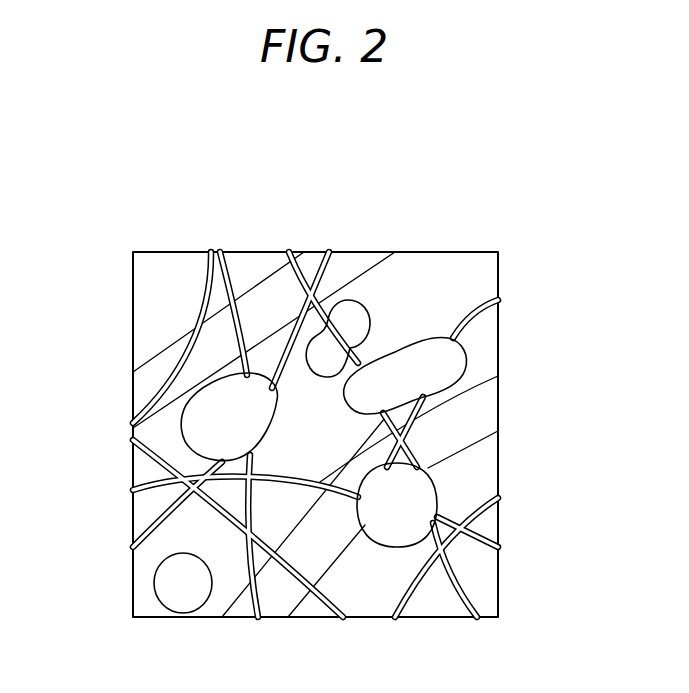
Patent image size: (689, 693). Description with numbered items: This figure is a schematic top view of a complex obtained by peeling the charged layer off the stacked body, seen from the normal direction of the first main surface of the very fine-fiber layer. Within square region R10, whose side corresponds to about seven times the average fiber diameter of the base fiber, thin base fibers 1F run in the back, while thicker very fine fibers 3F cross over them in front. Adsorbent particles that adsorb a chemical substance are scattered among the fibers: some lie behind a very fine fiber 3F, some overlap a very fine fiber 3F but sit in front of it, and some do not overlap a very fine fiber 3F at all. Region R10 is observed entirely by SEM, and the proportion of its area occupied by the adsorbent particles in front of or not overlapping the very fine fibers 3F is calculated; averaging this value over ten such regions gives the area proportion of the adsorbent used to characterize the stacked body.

The region R10 is at (353, 174).
The base fiber 1F is at (272, 295).
The very fine fiber 3F is at (478, 308).